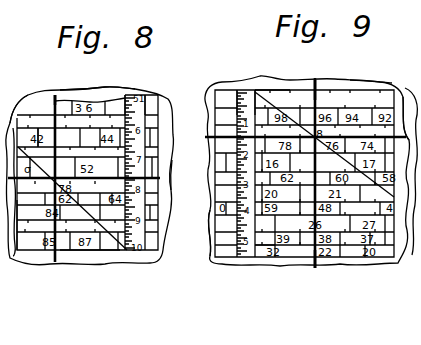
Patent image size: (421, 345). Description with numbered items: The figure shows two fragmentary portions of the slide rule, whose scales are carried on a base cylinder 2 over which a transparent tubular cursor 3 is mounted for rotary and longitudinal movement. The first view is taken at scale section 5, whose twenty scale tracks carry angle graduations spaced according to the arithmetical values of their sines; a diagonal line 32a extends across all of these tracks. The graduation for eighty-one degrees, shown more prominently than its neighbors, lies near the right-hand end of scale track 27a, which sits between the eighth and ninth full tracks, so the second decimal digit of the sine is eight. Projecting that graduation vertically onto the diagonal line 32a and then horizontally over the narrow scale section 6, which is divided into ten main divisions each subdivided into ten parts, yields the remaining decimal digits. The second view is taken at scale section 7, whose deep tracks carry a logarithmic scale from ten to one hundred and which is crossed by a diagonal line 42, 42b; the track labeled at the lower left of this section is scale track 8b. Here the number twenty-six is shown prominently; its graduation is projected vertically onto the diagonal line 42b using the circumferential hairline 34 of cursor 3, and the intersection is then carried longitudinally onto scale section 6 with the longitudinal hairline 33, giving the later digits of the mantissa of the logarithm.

In FIG. 8, the base cylinder 2 is at (33, 119).
In FIG. 9, the base cylinder 2 is at (204, 242).
In FIG. 8, the cursor 3 is at (121, 90).
In FIG. 9, the cursor 3 is at (385, 82).
In FIG. 8, the scale section 5 is at (75, 102).
In FIG. 8, the scale section 6 is at (143, 97).
In FIG. 9, the scale section 6 is at (239, 97).
In FIG. 9, the scale section 7 is at (325, 100).
In FIG. 8, the longitudinal hairline 33 is at (160, 176).
In FIG. 9, the longitudinal hairline 33 is at (410, 106).
In FIG. 8, the circumferential hairline 34 is at (54, 97).
In FIG. 9, the circumferential hairline 34 is at (318, 257).
In FIG. 8, the scale track 27a is at (36, 214).
In FIG. 8, the diagonal line 32a is at (108, 242).
In FIG. 8, the cell 42 is at (46, 137).
In FIG. 9, the diagonal line 42b is at (270, 92).
In FIG. 9, the cell 8b is at (244, 283).